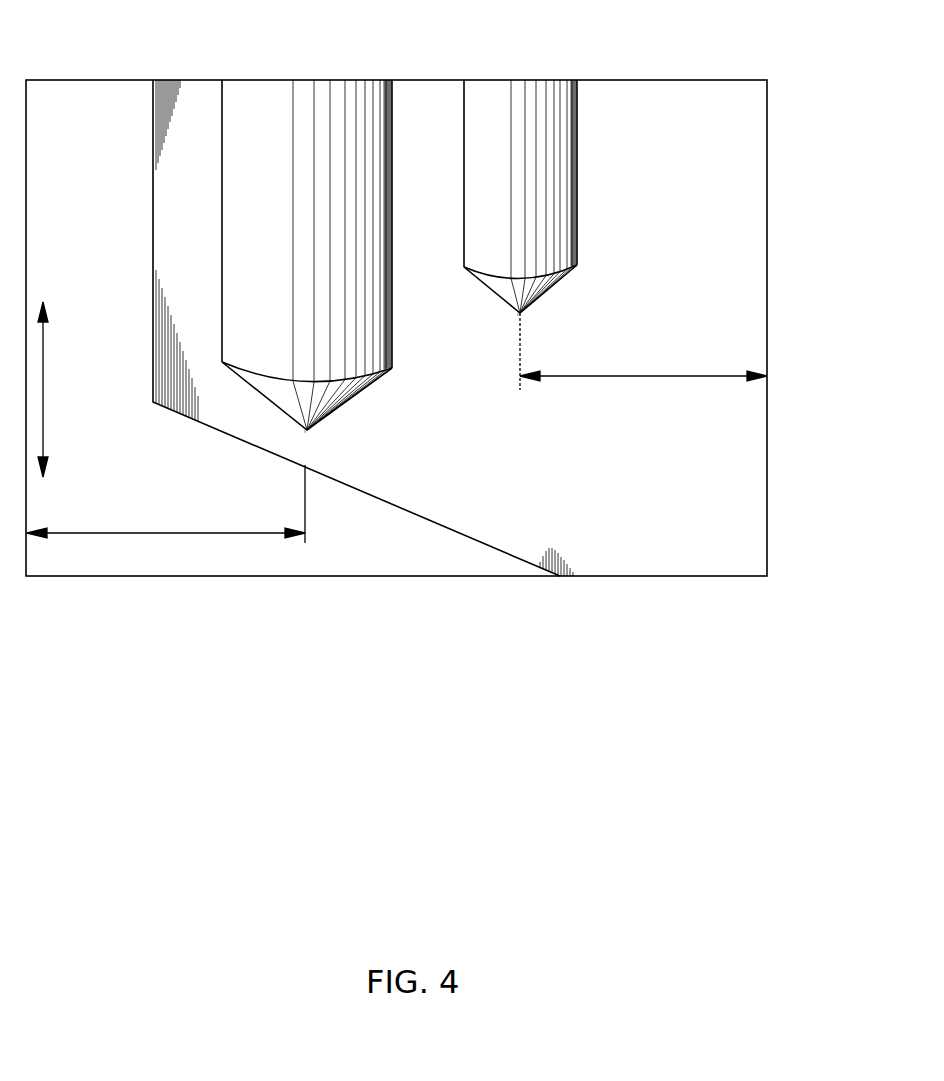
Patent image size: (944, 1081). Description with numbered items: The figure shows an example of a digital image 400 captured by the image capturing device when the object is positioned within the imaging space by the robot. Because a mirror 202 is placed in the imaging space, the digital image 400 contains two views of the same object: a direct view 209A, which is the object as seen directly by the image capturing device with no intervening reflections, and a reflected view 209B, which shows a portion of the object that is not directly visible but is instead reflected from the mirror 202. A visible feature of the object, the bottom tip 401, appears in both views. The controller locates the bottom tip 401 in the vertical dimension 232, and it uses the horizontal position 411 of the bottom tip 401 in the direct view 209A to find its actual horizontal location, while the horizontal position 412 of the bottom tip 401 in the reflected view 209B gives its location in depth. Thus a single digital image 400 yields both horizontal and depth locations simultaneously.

The digital image 400 is at (663, 576).
The mirror 202 is at (203, 220).
The direct view 209A is at (397, 392).
The reflected view 209B is at (575, 305).
The bottom tip 401 is at (307, 430).
The horizontal position 411 is at (122, 533).
The horizontal position 412 is at (594, 376).
The vertical dimension 232 is at (43, 380).